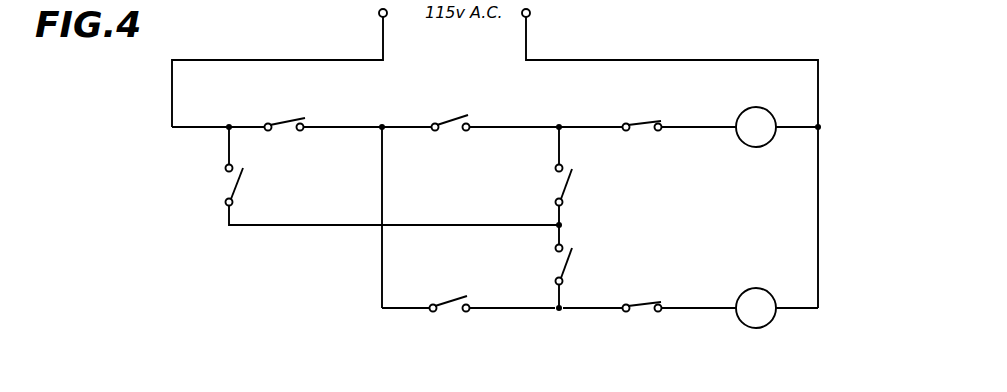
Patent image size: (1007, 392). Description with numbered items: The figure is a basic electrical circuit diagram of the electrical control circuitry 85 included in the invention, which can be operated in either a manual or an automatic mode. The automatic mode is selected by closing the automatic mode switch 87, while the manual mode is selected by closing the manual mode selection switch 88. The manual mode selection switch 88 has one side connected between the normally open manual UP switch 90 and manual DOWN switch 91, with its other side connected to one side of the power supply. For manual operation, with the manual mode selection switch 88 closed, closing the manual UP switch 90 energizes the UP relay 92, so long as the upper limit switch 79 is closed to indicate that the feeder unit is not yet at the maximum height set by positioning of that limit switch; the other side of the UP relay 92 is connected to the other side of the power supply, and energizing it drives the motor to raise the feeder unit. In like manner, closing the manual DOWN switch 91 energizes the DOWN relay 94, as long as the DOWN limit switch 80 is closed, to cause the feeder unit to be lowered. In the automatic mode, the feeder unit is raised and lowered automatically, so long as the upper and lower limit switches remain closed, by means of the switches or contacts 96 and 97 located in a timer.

The electrical control circuitry 85 is at (536, 180).
The automatic mode switch 87 is at (301, 130).
The manual mode selection switch 88 is at (228, 184).
The manual UP switch 90 is at (558, 184).
The manual DOWN switch 91 is at (560, 270).
The UP relay 92 is at (745, 144).
The DOWN relay 94 is at (760, 327).
The timer switch or contact 96 is at (446, 122).
The upper limit switch 79 is at (646, 124).
The timer switch or contact 97 is at (455, 297).
The DOWN limit switch 80 is at (647, 305).